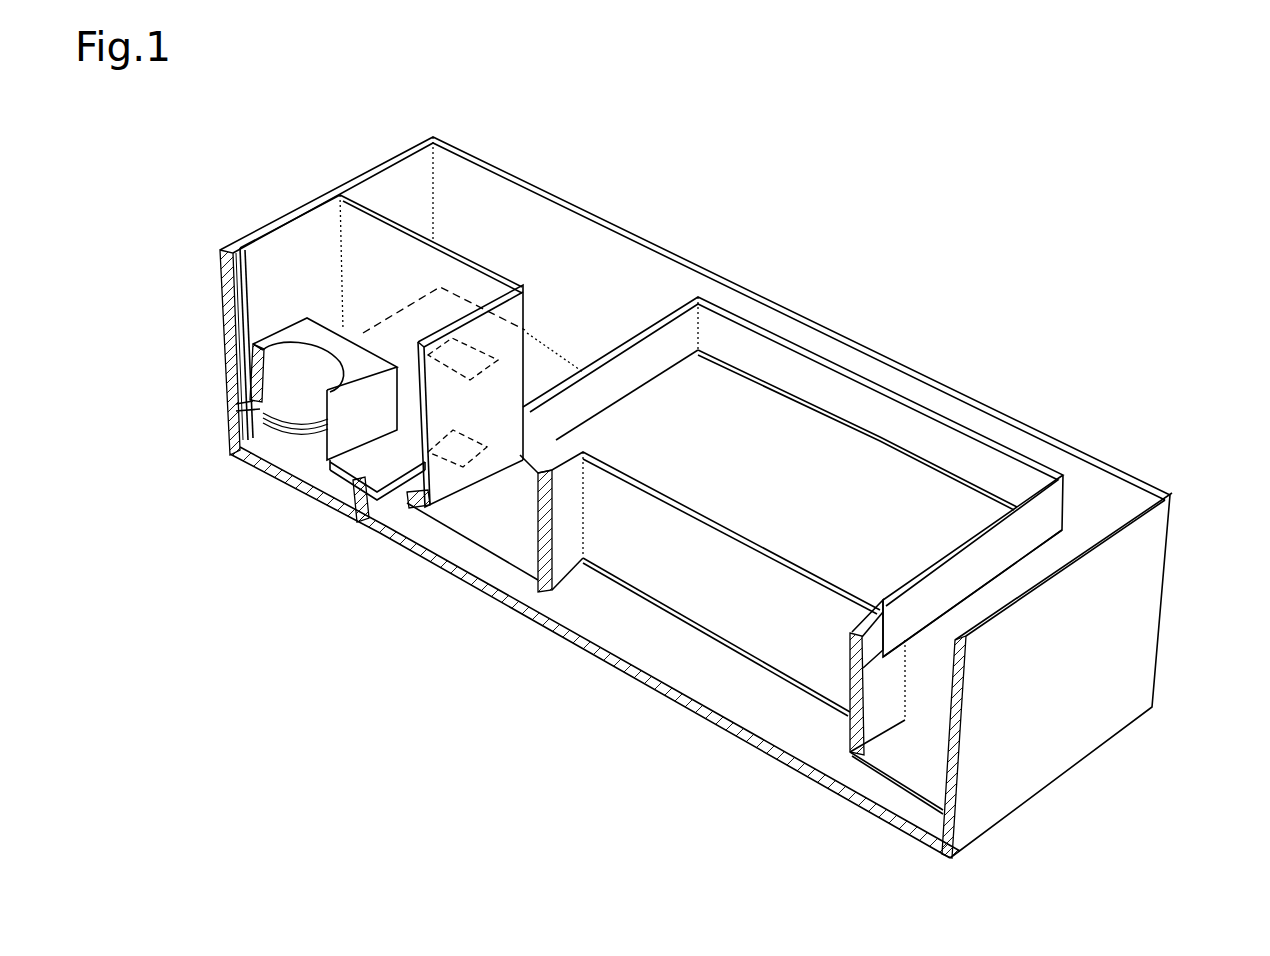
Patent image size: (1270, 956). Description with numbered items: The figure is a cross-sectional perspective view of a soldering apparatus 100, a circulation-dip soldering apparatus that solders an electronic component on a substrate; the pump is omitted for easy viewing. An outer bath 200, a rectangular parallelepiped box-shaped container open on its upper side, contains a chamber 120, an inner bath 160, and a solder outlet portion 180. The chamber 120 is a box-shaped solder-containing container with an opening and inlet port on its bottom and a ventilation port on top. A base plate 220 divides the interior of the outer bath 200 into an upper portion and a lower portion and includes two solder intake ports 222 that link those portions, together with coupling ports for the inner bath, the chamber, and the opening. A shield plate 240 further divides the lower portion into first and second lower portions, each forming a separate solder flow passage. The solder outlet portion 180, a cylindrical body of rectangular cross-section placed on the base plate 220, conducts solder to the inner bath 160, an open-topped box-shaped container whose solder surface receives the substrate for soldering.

The soldering apparatus 100 is at (1046, 213).
The chamber 120 is at (292, 254).
The inner bath 160 is at (857, 394).
The solder outlet portion 180 is at (888, 708).
The outer bath 200 is at (1156, 573).
The base plate 220 is at (493, 516).
The solder intake ports 222 is at (450, 342).
The shield plate 240 is at (383, 498).